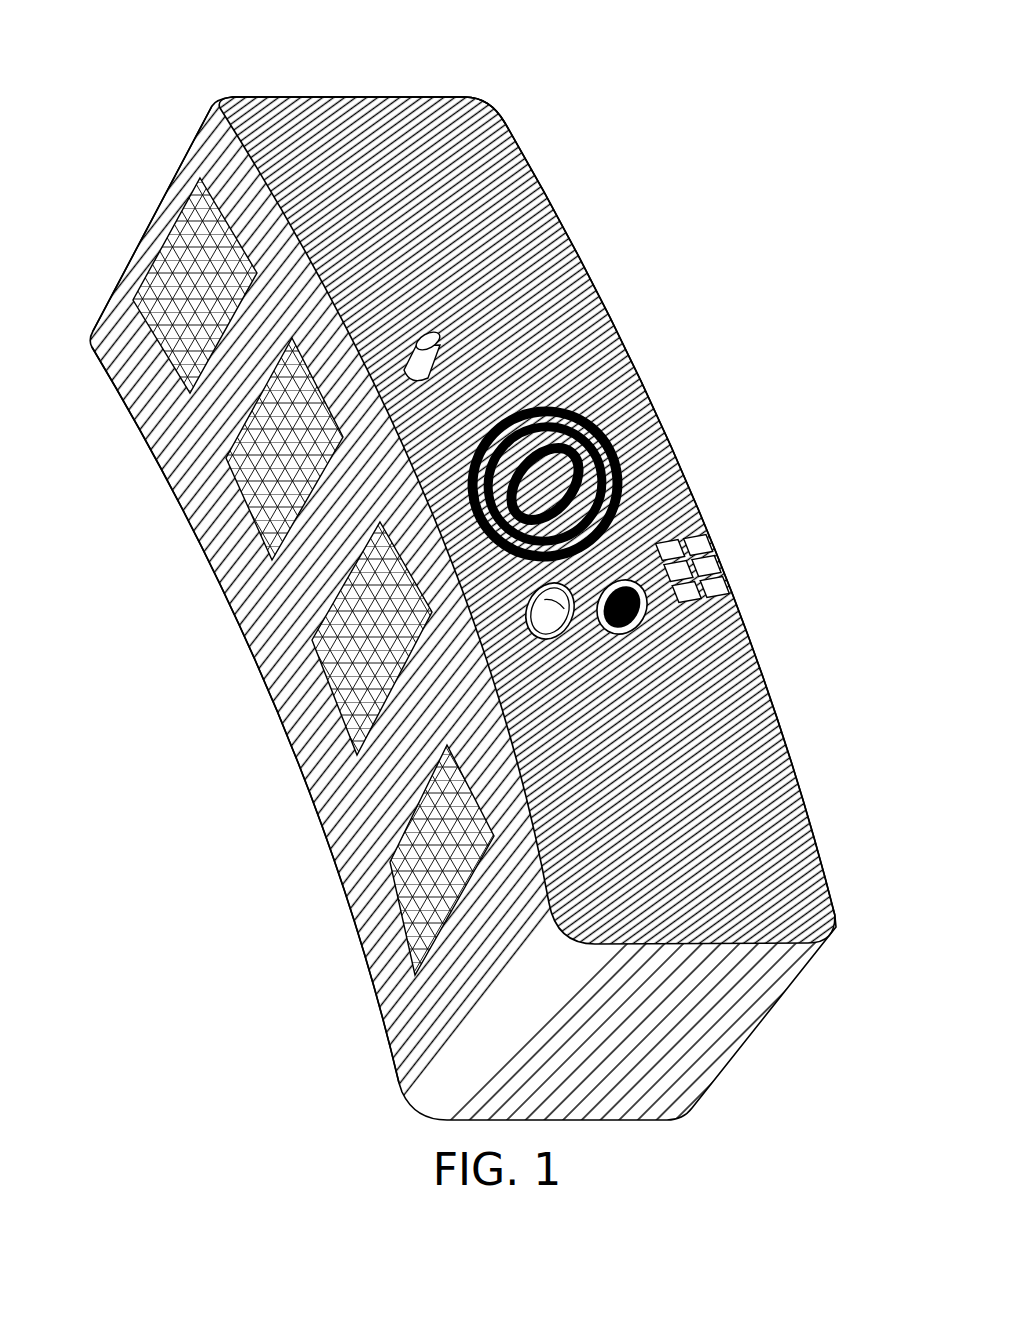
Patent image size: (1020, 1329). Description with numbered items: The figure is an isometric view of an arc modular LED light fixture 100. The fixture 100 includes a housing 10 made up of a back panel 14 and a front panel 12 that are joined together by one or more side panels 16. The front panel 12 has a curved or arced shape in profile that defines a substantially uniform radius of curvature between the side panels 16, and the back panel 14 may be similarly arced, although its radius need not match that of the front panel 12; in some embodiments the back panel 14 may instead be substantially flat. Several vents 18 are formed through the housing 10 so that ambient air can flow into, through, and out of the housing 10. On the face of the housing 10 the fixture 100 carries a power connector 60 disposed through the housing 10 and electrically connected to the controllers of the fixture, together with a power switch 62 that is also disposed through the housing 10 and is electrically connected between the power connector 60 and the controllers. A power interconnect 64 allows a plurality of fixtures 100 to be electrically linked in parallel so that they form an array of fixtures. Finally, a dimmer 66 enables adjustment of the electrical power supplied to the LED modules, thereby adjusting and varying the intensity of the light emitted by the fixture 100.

The arc modular LED light fixture 100 is at (510, 664).
The housing 10 is at (553, 203).
The front panel 12 is at (150, 472).
The back panel 14 is at (378, 180).
The side panel 16 is at (288, 598).
The vent 18 is at (302, 473).
The power connector 60 is at (650, 612).
The power switch 62 is at (588, 638).
The power interconnect 64 is at (718, 553).
The dimmer 66 is at (420, 334).